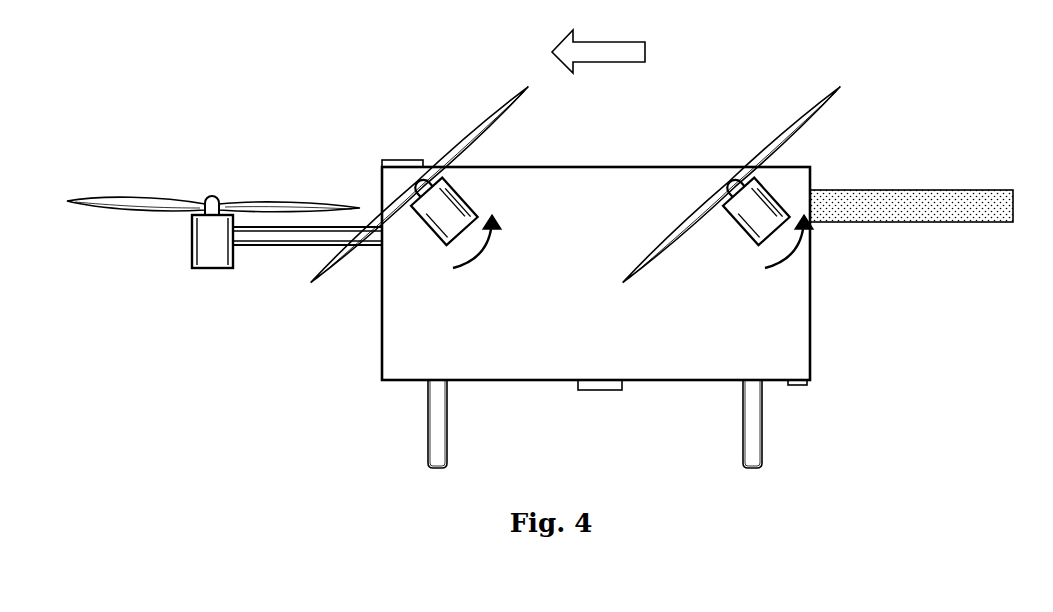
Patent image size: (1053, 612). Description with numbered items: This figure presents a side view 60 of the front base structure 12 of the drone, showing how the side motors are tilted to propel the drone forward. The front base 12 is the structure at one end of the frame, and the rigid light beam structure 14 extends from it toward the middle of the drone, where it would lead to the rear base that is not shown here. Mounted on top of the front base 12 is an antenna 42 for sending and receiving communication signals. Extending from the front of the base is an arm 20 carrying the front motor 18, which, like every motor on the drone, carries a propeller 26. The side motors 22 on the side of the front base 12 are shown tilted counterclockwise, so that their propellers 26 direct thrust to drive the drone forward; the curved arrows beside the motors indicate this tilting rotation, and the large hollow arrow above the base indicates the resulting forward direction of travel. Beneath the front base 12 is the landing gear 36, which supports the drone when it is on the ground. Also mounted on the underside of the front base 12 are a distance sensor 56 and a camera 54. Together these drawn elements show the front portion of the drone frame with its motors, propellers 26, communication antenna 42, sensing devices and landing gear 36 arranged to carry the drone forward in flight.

The front base structure 12 is at (815, 286).
The beam structure 14 is at (975, 190).
The front motor 18 is at (212, 268).
The arm 20 is at (283, 245).
The side motors 22 is at (747, 246).
The propeller 26 is at (105, 195).
The landing gear 36 is at (763, 448).
The antenna 42 is at (388, 160).
The camera 54 is at (800, 385).
The distance sensor 56 is at (600, 390).
The side view 60 is at (429, 84).